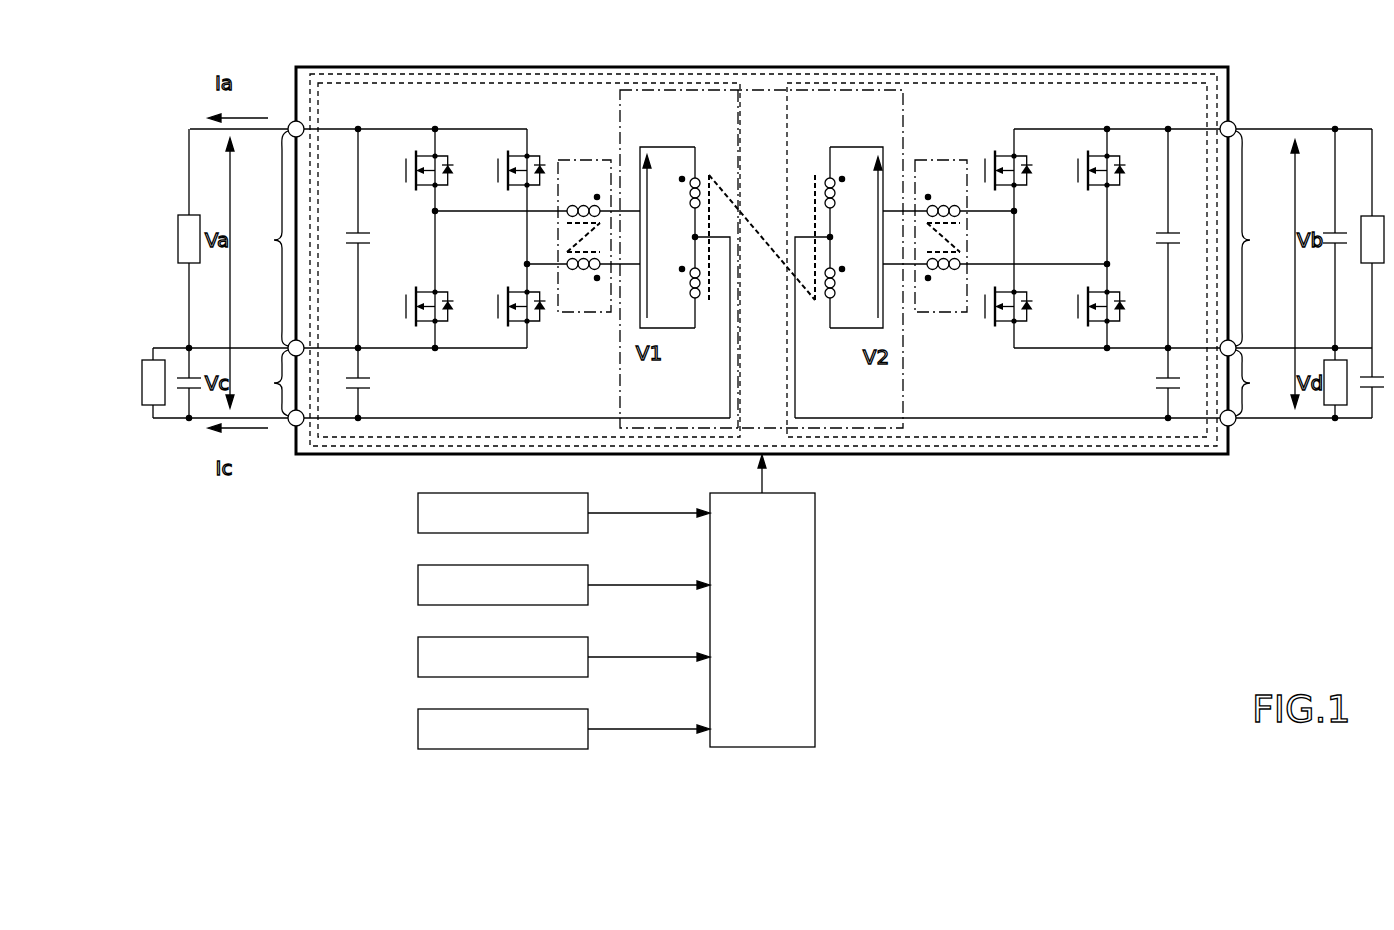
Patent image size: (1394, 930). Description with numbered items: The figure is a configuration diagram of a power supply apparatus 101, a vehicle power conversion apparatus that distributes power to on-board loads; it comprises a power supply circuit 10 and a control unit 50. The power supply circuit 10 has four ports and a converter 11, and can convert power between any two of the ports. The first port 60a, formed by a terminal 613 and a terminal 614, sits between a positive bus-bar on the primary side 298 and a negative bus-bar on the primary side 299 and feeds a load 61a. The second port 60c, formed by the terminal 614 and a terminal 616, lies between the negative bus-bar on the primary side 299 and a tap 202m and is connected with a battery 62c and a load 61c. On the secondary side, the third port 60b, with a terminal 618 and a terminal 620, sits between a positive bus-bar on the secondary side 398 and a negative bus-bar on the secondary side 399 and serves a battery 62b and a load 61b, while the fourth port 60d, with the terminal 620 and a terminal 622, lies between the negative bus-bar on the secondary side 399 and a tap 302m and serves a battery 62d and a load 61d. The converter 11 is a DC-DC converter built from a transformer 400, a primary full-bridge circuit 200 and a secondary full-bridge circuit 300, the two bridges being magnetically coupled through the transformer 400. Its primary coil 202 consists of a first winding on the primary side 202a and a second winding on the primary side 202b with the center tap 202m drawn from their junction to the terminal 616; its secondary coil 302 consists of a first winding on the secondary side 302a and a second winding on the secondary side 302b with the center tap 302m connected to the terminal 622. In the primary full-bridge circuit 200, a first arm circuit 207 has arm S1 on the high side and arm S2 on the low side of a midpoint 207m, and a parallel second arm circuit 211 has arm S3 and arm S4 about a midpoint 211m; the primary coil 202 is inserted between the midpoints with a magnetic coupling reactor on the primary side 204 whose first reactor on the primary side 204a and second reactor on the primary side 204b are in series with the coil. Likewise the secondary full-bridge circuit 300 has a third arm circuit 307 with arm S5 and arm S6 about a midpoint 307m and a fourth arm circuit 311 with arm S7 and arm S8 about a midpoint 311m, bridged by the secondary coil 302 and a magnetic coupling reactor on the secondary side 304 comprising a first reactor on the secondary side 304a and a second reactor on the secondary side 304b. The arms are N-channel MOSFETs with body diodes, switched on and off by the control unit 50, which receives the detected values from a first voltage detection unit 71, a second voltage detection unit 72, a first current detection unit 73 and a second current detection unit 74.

The power supply apparatus 101 is at (244, 30).
The power supply circuit 10 is at (1123, 67).
The converter 11 is at (1073, 74).
The primary full-bridge circuit 200 is at (605, 83).
The secondary full-bridge circuit 300 is at (921, 83).
The transformer 400 is at (763, 90).
The primary coil 202 is at (685, 254).
The first winding on the primary side 202a is at (686, 172).
The second winding on the primary side 202b is at (692, 300).
The tap 202m is at (693, 236).
The secondary coil 302 is at (839, 254).
The first winding on the secondary side 302a is at (838, 172).
The second winding on the secondary side 302b is at (836, 300).
The tap 302m is at (831, 236).
The magnetic coupling reactor on the primary side 204 is at (584, 211).
The first reactor on the primary side 204a is at (583, 205).
The second reactor on the primary side 204b is at (584, 272).
The magnetic coupling reactor on the secondary side 304 is at (940, 211).
The first reactor on the secondary side 304a is at (945, 205).
The second reactor on the secondary side 304b is at (944, 272).
The first arm circuit 207 is at (422, 346).
The midpoint 207m is at (433, 211).
The second arm circuit 211 is at (510, 346).
The midpoint 211m is at (525, 265).
The third arm circuit 307 is at (989, 346).
The midpoint 307m is at (1018, 211).
The fourth arm circuit 311 is at (1073, 346).
The midpoint 311m is at (1104, 262).
The positive bus-bar on the primary side 298 is at (388, 127).
The negative bus-bar on the primary side 299 is at (398, 350).
The positive bus-bar on the secondary side 398 is at (1146, 128).
The negative bus-bar on the secondary side 399 is at (1136, 350).
The terminal 613 is at (290, 123).
The terminal 614 is at (303, 342).
The terminal 616 is at (291, 426).
The terminal 618 is at (1235, 124).
The terminal 620 is at (1221, 343).
The terminal 622 is at (1233, 426).
The first port 60a is at (261, 238).
The third port 60b is at (1263, 238).
The second port 60c is at (261, 383).
The fourth port 60d is at (1263, 383).
The load 61a is at (192, 215).
The load 61b is at (1368, 216).
The load 61c is at (148, 405).
The load 61d is at (1342, 405).
The battery 62b is at (1333, 243).
The battery 62c is at (187, 378).
The battery 62d is at (1370, 377).
The control unit 50 is at (815, 515).
The first voltage detection unit 71 is at (418, 514).
The second voltage detection unit 72 is at (418, 584).
The first current detection unit 73 is at (418, 656).
The second current detection unit 74 is at (418, 728).
The arm S1 is at (406, 174).
The arm S2 is at (406, 310).
The arm S3 is at (498, 172).
The arm S4 is at (498, 310).
The arm S5 is at (985, 162).
The arm S6 is at (985, 314).
The arm S7 is at (1078, 172).
The arm S8 is at (1078, 310).